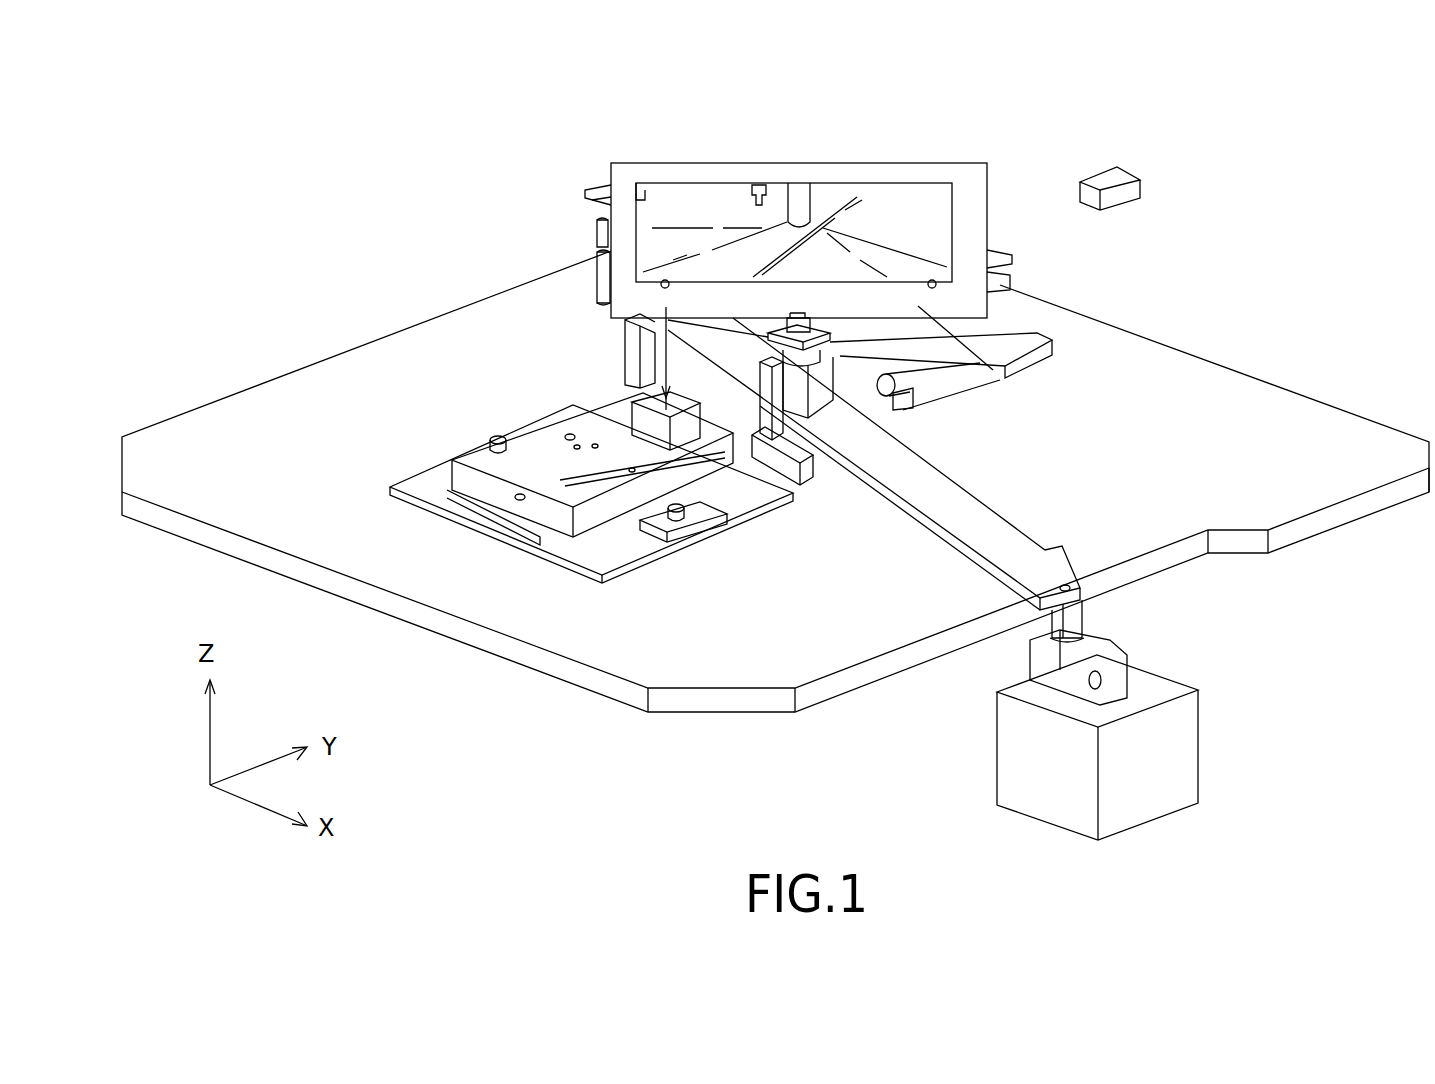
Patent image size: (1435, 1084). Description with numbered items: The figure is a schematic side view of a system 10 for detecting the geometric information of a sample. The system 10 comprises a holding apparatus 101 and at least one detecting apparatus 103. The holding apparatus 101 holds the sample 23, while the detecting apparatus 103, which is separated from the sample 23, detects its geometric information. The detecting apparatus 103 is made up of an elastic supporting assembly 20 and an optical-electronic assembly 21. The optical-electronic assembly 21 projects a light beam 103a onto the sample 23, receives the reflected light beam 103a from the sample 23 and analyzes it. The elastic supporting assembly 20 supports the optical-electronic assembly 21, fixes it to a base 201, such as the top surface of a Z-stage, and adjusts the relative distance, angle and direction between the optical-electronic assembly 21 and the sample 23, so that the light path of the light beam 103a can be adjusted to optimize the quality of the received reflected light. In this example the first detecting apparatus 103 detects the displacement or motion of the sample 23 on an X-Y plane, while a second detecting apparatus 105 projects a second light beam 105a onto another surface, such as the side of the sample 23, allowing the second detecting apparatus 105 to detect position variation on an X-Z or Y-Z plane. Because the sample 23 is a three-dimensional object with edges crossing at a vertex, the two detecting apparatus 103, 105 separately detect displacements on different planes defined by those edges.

The system 10 is at (150, 89).
The elastic supporting assembly 20 is at (421, 469).
The optical-electronic assembly 21 is at (626, 416).
The sample 23 is at (920, 207).
The holding apparatus 101 is at (1040, 264).
The detecting apparatus 103 is at (218, 291).
The light beam 103a is at (652, 359).
The second detecting apparatus 105 is at (1147, 180).
The second light beam 105a is at (990, 197).
The base 201 is at (264, 464).